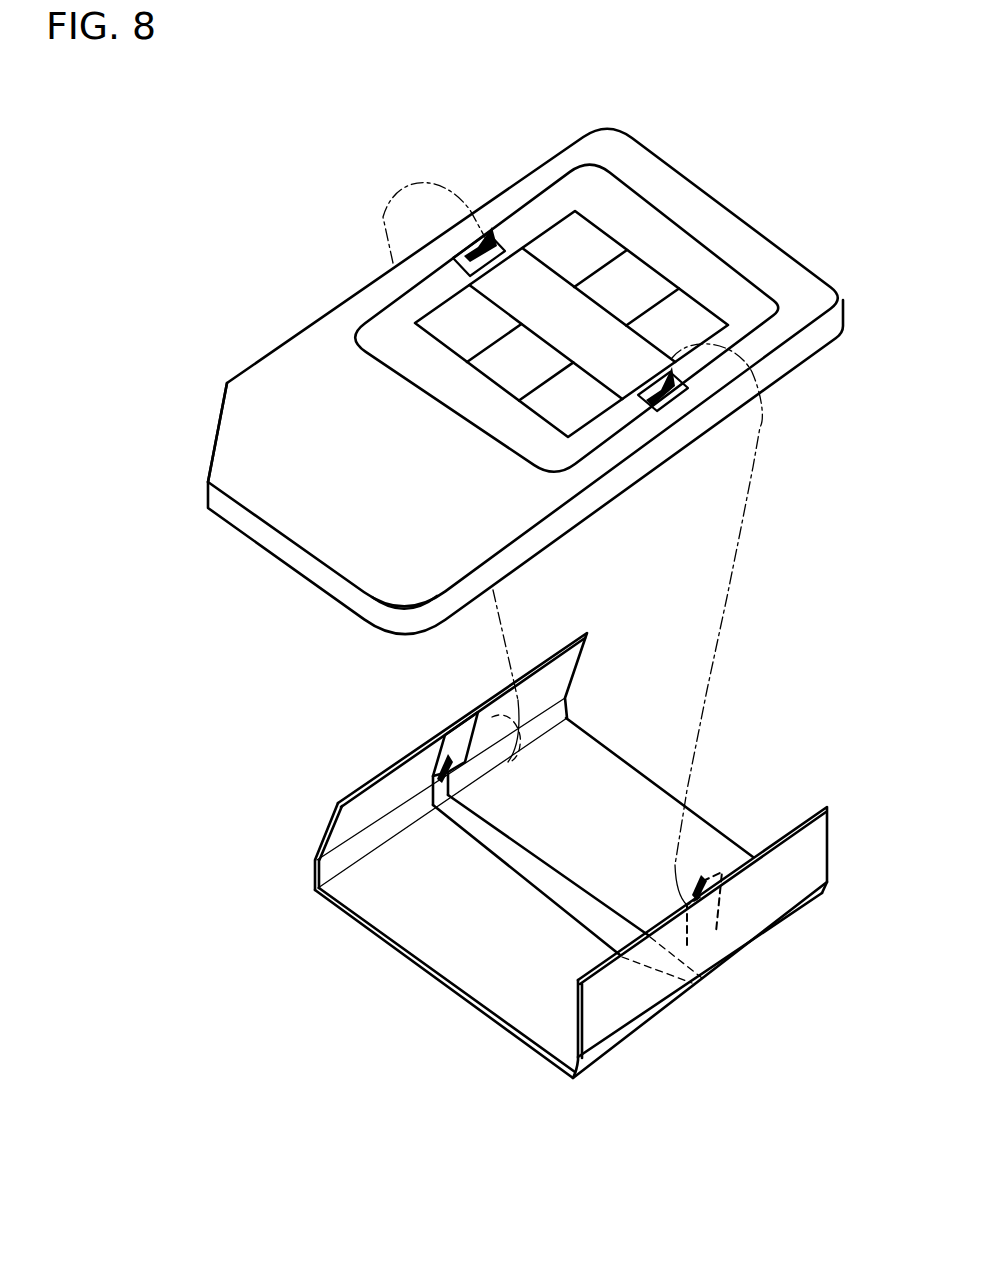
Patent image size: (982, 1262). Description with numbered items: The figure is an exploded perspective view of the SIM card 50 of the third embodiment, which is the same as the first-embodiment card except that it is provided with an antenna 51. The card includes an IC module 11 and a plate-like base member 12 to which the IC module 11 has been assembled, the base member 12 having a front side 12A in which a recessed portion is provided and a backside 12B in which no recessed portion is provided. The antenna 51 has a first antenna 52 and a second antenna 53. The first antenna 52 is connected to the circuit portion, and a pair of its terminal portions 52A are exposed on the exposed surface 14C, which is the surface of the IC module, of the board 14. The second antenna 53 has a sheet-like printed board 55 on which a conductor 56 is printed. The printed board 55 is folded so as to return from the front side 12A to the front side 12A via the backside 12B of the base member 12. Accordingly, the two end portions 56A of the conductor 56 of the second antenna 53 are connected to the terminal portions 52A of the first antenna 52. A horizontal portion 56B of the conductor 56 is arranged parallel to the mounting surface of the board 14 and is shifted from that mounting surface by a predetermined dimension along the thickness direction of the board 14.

The SIM card 50 is at (168, 637).
The antenna 51 is at (282, 841).
The first antenna 52 is at (482, 238).
The terminal portions 52A is at (470, 246).
The second antenna 53 is at (343, 914).
The printed board 55 is at (450, 948).
The conductor 56 is at (553, 888).
The end portions 56A is at (462, 740).
The horizontal portion 56B is at (573, 890).
The IC module 11 is at (660, 212).
The base member 12 is at (283, 340).
The front side 12A is at (222, 402).
The backside 12B is at (357, 600).
The board 14 is at (710, 243).
The exposed surface 14C is at (571, 196).